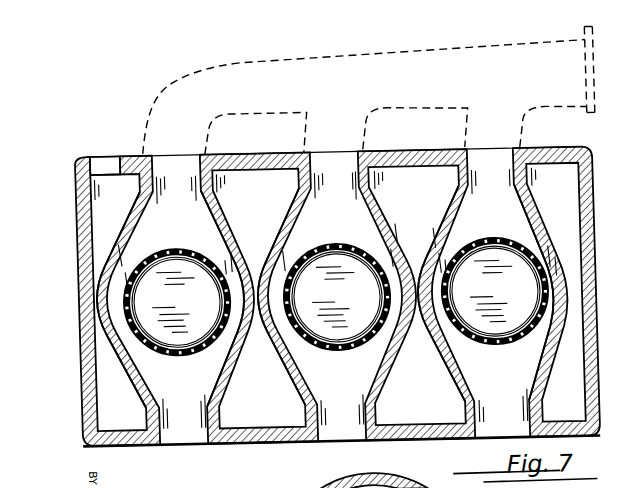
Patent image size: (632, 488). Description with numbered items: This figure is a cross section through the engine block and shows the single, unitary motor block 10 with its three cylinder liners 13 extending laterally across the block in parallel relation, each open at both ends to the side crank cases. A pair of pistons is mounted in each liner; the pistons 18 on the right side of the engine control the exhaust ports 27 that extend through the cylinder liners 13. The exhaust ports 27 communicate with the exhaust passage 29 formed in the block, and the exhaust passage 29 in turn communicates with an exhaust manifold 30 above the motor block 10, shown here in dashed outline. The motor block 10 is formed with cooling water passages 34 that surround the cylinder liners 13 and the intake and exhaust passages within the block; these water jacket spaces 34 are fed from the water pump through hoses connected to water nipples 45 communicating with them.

The motor block 10 is at (271, 156).
The cylinder liner 13 is at (189, 350).
The piston 18 is at (206, 292).
The exhaust port 27 is at (149, 246).
The exhaust passage 29 is at (141, 358).
The exhaust manifold 30 is at (377, 56).
The cooling water passage 34 is at (106, 205).
The water nipple 45 is at (119, 161).